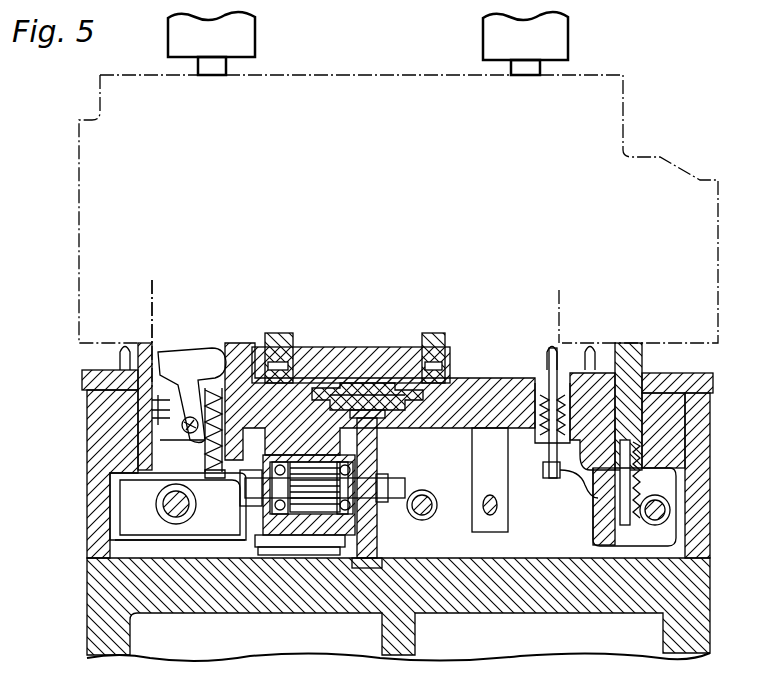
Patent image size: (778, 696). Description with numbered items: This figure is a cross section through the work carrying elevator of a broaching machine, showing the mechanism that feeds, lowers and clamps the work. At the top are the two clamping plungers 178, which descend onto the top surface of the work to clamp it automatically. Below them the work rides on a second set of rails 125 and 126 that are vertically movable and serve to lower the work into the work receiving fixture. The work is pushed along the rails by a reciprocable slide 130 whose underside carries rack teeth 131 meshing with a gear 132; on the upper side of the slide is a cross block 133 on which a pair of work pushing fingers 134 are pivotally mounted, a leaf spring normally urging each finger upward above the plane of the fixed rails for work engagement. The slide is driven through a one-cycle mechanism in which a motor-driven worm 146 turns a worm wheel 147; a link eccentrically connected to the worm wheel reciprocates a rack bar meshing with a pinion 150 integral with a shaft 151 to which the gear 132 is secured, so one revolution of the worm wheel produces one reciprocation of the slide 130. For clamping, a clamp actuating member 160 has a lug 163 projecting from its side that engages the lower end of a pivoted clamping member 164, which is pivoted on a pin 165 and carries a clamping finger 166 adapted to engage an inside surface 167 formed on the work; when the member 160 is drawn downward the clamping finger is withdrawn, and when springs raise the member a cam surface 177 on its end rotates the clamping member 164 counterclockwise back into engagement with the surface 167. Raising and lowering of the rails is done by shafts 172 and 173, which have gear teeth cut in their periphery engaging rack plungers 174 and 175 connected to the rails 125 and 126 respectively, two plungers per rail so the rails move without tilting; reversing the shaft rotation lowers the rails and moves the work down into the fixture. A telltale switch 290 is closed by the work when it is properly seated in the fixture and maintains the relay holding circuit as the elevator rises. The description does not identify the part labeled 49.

The spindle 49 is at (300, 440).
The vertically movable rail 125 is at (125, 358).
The vertically movable rail 126 is at (640, 372).
The reciprocable slide 130 is at (375, 388).
The rack teeth 131 is at (358, 395).
The gear 132 is at (378, 447).
The cross block 133 is at (365, 345).
The work pushing finger 134 is at (275, 338).
The worm 146 is at (422, 520).
The worm wheel 147 is at (430, 492).
The pinion 150 is at (330, 490).
The shaft 151 is at (392, 475).
The clamp actuating member 160 is at (200, 355).
The lug 163 is at (160, 441).
The pivoted clamping member 164 is at (195, 355).
The pin 165 is at (182, 436).
The clamping finger 166 is at (150, 352).
The inside surface 167 is at (152, 290).
The shaft 172 is at (156, 508).
The shaft 173 is at (662, 508).
The rack plunger 174 is at (135, 500).
The rack plunger 175 is at (627, 463).
The cam surface 177 is at (205, 395).
The clamping plunger 178 is at (240, 44).
The telltale switch 290 is at (560, 372).